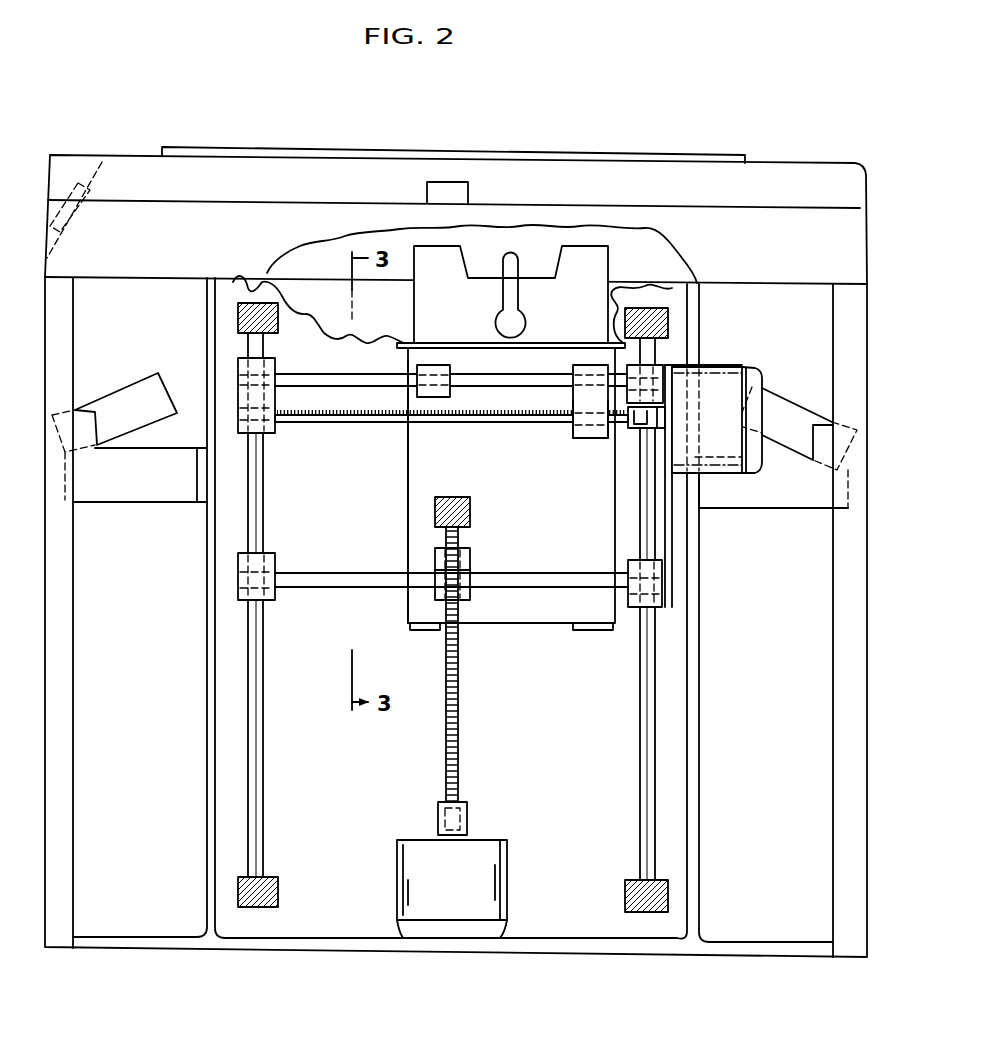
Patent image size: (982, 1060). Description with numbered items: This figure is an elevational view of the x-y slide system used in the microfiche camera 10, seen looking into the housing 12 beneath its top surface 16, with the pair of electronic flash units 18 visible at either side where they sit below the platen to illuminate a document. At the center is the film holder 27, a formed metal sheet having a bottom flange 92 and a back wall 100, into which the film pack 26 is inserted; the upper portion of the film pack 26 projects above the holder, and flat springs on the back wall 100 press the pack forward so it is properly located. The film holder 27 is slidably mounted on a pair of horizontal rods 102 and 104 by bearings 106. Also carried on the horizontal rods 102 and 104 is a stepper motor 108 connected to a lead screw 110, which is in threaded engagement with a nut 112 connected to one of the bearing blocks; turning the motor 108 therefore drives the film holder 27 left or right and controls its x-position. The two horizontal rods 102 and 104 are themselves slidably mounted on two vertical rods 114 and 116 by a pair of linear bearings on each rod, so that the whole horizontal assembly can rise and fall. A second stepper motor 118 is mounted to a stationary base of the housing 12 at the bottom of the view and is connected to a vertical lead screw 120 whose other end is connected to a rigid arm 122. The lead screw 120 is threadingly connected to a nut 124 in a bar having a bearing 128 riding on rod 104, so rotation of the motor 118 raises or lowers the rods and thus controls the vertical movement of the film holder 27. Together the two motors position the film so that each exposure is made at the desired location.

The microfiche camera 10 is at (105, 120).
The housing 12 is at (267, 200).
The top surface 16 is at (775, 163).
The electronic flash units 18 is at (112, 391).
The film pack 26 is at (608, 247).
The film holder 27 is at (406, 474).
The bottom flange 92 is at (435, 631).
The back wall 100 is at (511, 483).
The horizontal rod 102 is at (315, 362).
The horizontal rod 104 is at (326, 573).
The bearings 106 is at (432, 365).
The stepper motor 108 is at (730, 367).
The lead screw 110 is at (345, 424).
The nut 112 is at (583, 432).
The vertical rod 114 is at (265, 505).
The vertical rod 116 is at (640, 703).
The stepper motor 118 is at (467, 898).
The lead screw 120 is at (460, 752).
The rigid arm 122 is at (443, 497).
The nut 124 is at (470, 553).
The bearing 128 is at (470, 598).